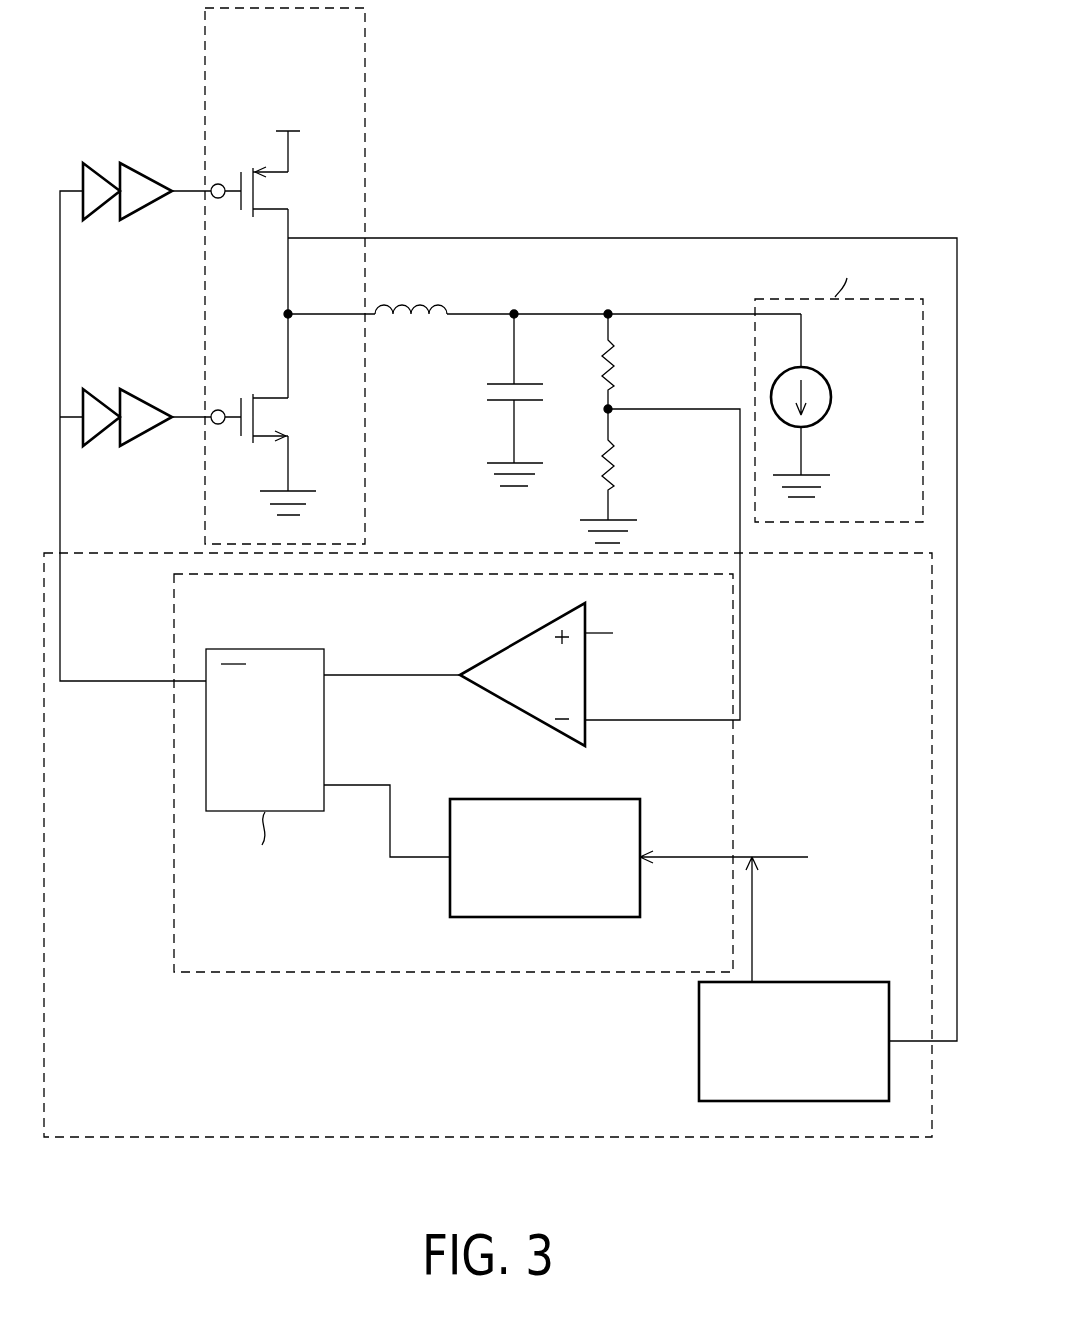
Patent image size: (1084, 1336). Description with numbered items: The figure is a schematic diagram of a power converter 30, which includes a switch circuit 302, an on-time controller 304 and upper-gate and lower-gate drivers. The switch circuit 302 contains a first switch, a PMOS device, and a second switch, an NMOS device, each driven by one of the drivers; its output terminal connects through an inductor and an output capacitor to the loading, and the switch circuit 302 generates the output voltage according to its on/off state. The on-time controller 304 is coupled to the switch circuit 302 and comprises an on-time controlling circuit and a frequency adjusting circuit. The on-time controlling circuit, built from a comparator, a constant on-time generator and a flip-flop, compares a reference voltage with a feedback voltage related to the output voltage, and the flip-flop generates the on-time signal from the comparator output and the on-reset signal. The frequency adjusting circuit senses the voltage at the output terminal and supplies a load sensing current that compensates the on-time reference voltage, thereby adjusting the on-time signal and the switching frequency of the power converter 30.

The power converter 30 is at (663, 76).
The switch circuit 302 is at (365, 123).
The on-time controller 304 is at (317, 1140).